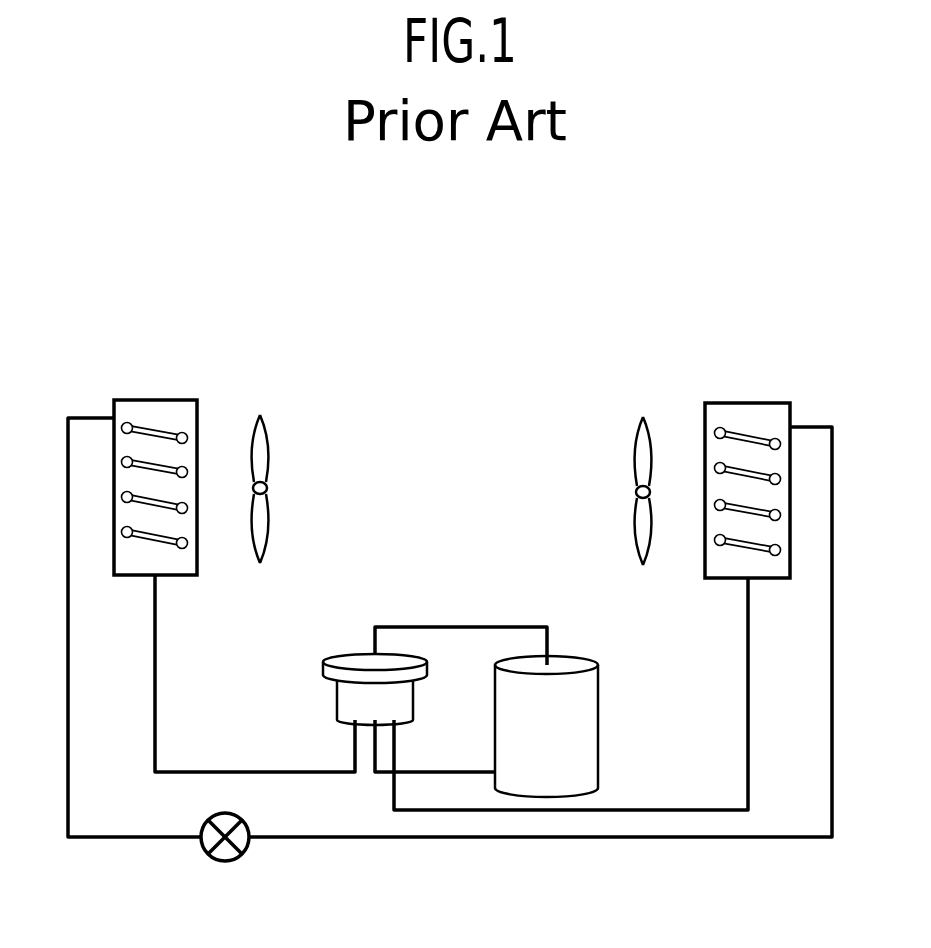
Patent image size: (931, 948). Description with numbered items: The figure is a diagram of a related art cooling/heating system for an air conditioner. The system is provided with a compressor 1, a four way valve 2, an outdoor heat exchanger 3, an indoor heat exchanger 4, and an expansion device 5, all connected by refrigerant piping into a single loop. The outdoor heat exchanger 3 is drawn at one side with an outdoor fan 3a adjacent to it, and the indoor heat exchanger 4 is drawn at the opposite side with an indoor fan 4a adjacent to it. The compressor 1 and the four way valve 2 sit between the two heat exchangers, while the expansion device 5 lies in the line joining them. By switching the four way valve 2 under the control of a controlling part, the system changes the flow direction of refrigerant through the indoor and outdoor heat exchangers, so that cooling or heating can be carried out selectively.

The compressor 1 is at (600, 752).
The four way valve 2 is at (345, 696).
The outdoor heat exchanger 3 is at (760, 402).
The outdoor fan 3a is at (641, 540).
The indoor heat exchanger 4 is at (151, 398).
The indoor fan 4a is at (262, 541).
The expansion device 5 is at (228, 862).